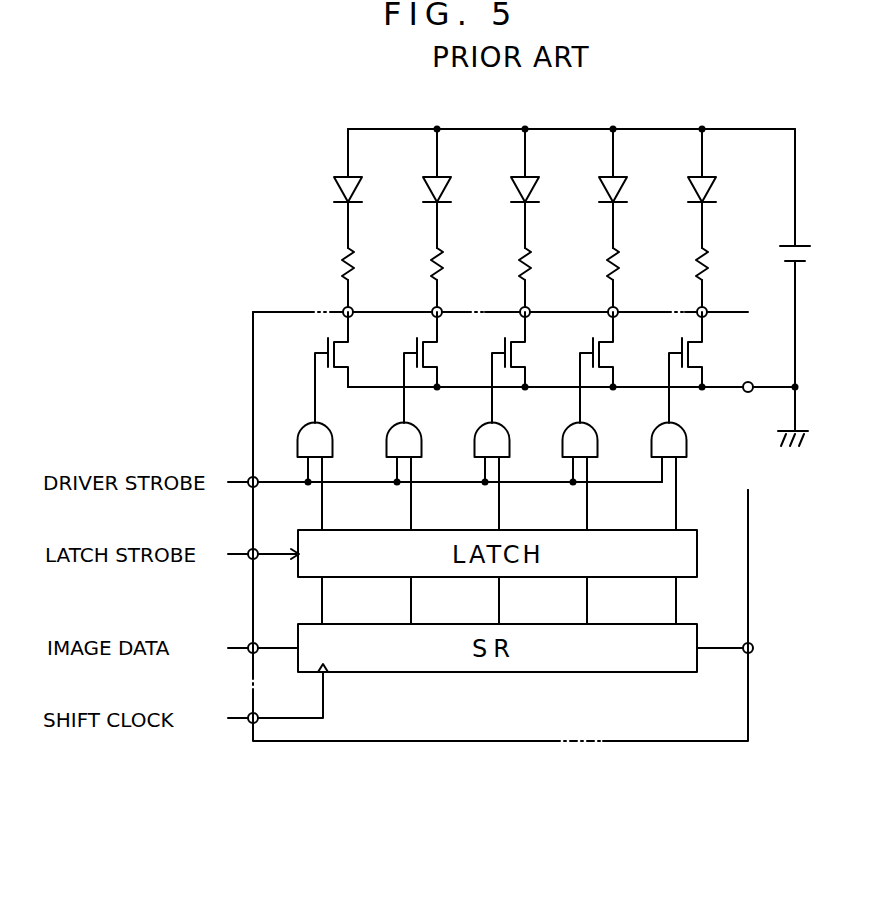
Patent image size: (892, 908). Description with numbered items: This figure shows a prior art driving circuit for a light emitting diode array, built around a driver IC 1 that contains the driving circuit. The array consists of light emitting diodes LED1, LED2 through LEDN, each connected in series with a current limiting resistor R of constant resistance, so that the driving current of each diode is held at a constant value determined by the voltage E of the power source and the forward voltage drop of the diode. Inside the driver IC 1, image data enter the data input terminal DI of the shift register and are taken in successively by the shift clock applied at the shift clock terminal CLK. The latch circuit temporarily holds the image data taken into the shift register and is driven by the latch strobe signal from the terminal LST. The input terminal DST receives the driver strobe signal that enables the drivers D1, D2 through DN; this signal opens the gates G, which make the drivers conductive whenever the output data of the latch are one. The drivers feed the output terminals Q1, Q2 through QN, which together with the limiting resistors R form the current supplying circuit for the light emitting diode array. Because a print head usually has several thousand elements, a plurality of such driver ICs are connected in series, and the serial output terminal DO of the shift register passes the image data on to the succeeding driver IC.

The driver IC 1 is at (551, 743).
The light emitting diode LED1 is at (335, 177).
The light emitting diode LED2 is at (426, 182).
The light emitting diode LEDN is at (688, 184).
The current limiting resistor R is at (513, 264).
The output terminal Q1 is at (353, 309).
The output terminal Q2 is at (442, 309).
The output terminal QN is at (707, 309).
The driver D1 is at (327, 340).
The driver D2 is at (424, 343).
The driver DN is at (686, 343).
The gate G is at (333, 441).
The voltage of the power source E is at (783, 255).
The input terminal DST is at (255, 487).
The terminal LST is at (254, 559).
The data input terminal DI is at (254, 653).
The shift clock terminal CLK is at (250, 723).
The serial output terminal DO is at (754, 649).